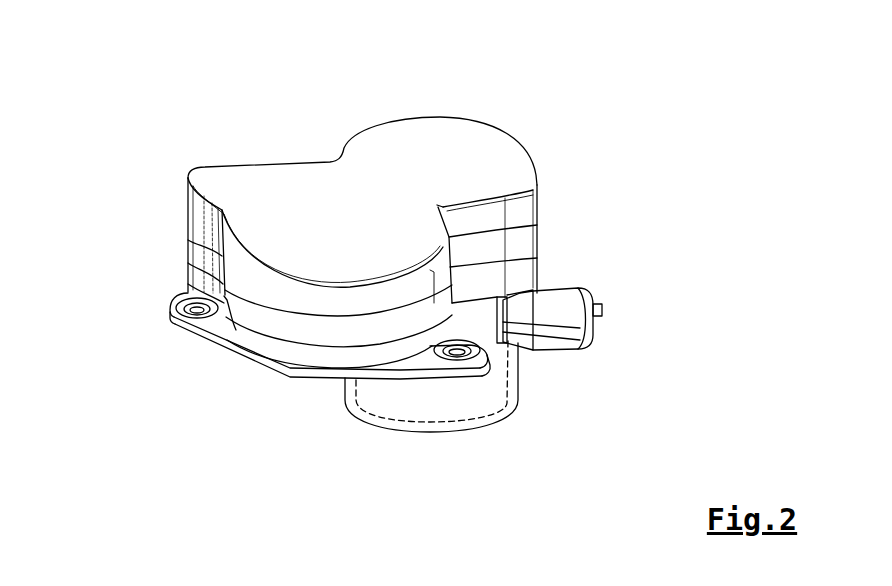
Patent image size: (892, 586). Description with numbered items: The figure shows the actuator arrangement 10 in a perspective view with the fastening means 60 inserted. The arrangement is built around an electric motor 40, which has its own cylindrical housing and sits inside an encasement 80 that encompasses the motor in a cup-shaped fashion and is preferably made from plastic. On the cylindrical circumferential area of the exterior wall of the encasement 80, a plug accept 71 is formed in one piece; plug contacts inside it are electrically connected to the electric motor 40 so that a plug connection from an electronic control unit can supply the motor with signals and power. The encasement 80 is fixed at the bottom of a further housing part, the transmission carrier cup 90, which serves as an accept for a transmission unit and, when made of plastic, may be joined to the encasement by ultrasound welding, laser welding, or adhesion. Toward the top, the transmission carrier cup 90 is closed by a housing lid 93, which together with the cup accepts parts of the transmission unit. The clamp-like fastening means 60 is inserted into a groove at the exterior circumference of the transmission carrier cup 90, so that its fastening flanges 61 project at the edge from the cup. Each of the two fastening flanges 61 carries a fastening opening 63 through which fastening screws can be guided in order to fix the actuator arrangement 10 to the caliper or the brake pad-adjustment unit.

The actuator arrangement 10 is at (290, 104).
The housing lid 93 is at (497, 160).
The transmission carrier cup 90 is at (202, 252).
The fastening opening 63 is at (187, 305).
The fastening flange 61 is at (210, 323).
The fastening means 60 is at (283, 375).
The electric motor 40 is at (492, 390).
The encasement 80 is at (513, 382).
The plug accept 71 is at (558, 315).